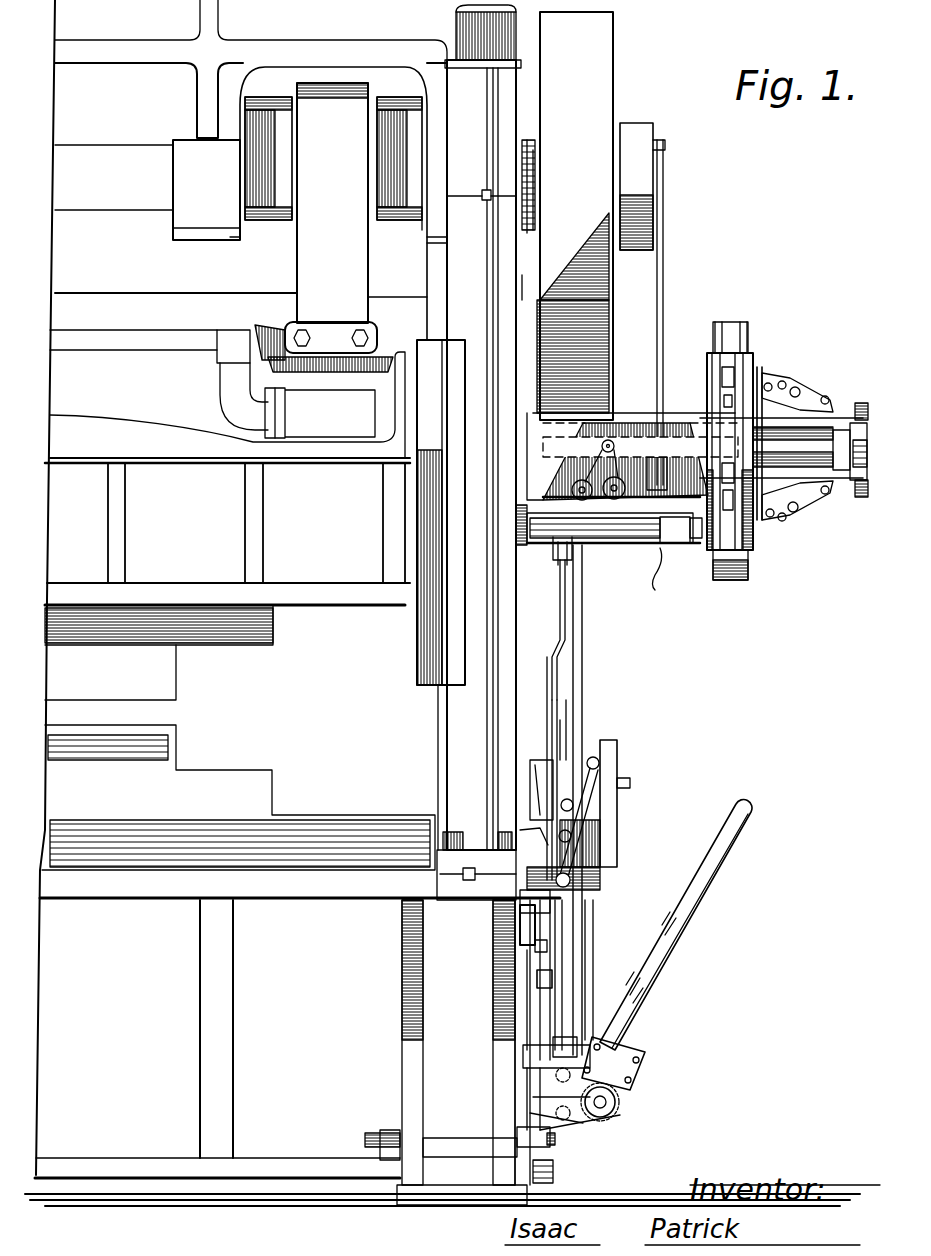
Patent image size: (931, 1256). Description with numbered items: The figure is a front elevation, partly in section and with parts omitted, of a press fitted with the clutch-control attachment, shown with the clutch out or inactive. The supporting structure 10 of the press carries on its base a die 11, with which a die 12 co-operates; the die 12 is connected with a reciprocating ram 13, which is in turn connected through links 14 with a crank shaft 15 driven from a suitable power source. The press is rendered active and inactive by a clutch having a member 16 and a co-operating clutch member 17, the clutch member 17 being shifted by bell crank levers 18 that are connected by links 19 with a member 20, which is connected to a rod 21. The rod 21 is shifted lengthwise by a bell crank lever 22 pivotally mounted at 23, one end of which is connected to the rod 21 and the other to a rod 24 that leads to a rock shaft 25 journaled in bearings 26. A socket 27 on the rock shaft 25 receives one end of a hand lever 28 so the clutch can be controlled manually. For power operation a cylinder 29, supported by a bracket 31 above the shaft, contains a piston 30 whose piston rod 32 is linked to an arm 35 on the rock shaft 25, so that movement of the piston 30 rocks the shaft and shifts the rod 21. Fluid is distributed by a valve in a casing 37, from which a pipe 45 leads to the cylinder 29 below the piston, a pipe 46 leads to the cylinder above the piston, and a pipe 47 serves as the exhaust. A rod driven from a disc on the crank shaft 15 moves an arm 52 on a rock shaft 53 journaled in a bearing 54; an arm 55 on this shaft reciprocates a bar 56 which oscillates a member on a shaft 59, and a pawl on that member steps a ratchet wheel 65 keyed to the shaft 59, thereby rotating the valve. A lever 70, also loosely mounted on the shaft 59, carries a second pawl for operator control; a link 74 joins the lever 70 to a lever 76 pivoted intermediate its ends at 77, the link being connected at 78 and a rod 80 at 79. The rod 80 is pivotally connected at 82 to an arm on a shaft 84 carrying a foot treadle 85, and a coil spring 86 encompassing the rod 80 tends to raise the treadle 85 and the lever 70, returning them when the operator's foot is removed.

The supporting structure 10 is at (402, 932).
The die 11 is at (174, 758).
The die 12 is at (158, 672).
The reciprocating ram 13 is at (365, 600).
The links 14 is at (303, 283).
The crank shaft 15 is at (262, 163).
The clutch member 16 is at (755, 353).
The clutch member 17 is at (758, 372).
The bell crank levers 18 is at (640, 135).
The links 19 is at (660, 300).
The member 20 is at (863, 412).
The rod 21 is at (847, 457).
The bell crank lever 22 is at (610, 440).
The pivot 23 is at (600, 544).
The rod 24 is at (582, 648).
The rock shaft 25 is at (620, 1105).
The bearings 26 is at (585, 1125).
The socket 27 is at (640, 1070).
The hand lever 28 is at (650, 983).
The cylinder 29 is at (590, 880).
The piston 30 is at (555, 1090).
The bracket 31 is at (518, 922).
The piston rod 32 is at (575, 1030).
The arm 35 is at (540, 1118).
The casing 37 is at (617, 760).
The pipe 45 is at (575, 808).
The pipe 46 is at (575, 838).
The exhaust pipe 47 is at (595, 757).
The arm 52 is at (671, 316).
The rock shaft 53 is at (647, 575).
The bearing 54 is at (516, 540).
The arm 55 is at (553, 553).
The bar 56 is at (562, 595).
The shaft 59 is at (530, 770).
The ratchet wheel 65 is at (566, 745).
The lever 70 is at (547, 708).
The link 74 is at (520, 835).
The lever 76 is at (535, 950).
The pivot 77 is at (552, 945).
The pivot 78 is at (550, 905).
The pivot 79 is at (527, 990).
The rod 80 is at (552, 1000).
The pivot 82 is at (553, 1180).
The shaft 84 is at (455, 1150).
The foot treadle 85 is at (375, 1133).
The coil spring 86 is at (553, 1145).